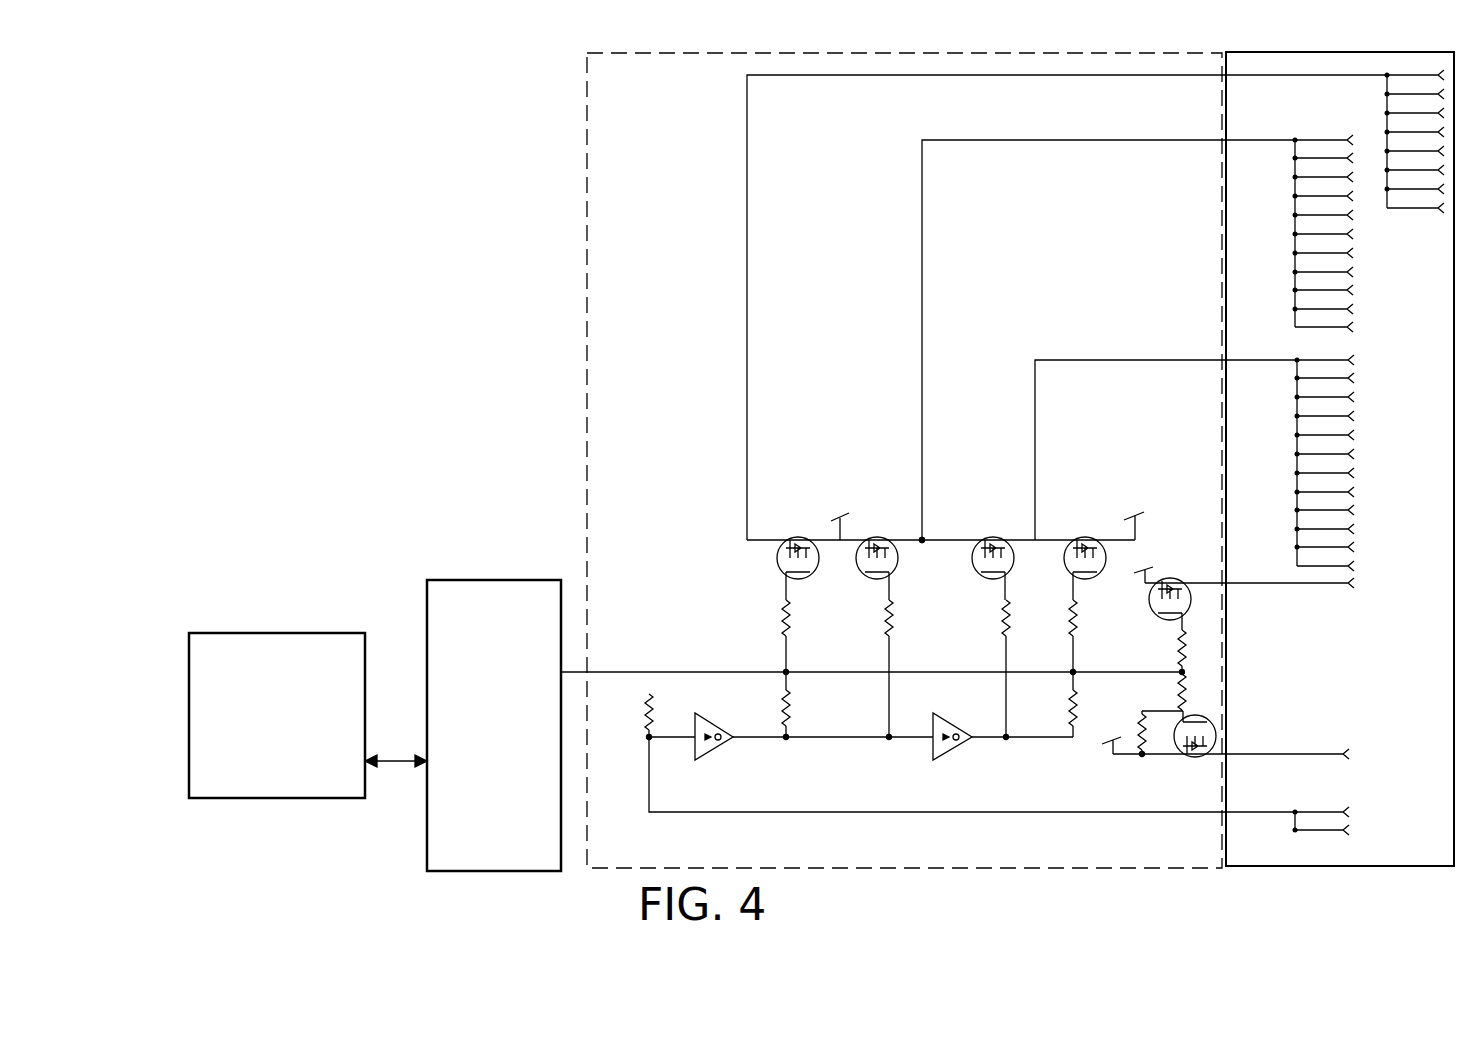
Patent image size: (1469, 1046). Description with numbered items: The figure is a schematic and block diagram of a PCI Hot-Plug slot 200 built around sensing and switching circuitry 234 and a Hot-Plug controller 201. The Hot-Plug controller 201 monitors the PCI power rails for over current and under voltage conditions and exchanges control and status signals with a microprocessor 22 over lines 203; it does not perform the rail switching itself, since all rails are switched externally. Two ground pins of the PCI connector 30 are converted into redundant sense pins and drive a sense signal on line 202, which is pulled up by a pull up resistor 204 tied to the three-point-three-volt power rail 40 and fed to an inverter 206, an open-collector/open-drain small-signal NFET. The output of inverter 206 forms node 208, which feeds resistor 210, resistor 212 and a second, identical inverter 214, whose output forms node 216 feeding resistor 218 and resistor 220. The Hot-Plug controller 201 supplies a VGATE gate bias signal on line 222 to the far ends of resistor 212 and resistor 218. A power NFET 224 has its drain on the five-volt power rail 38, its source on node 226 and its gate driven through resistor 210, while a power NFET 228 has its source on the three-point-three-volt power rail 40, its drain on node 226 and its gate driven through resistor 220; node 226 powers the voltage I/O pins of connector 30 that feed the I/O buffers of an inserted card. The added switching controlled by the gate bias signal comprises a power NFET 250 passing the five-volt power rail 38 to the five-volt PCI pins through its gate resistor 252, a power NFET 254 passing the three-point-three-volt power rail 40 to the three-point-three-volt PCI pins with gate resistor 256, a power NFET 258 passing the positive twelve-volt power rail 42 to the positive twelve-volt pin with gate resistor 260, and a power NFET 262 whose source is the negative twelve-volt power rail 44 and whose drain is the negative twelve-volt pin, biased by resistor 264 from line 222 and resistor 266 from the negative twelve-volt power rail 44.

The microprocessor 22 is at (323, 633).
The Hot-Plug controller 201 is at (448, 580).
The lines 203 is at (395, 758).
The PCI Hot-Plug slot 200 is at (437, 395).
The sensing and switching circuitry 234 is at (585, 320).
The PCI connector 30 is at (1221, 99).
The 5-volt power rail 38 is at (830, 512).
The 3.3-volt power rail 40 is at (1138, 516).
The +12-volt power rail 42 is at (1142, 578).
The −12-volt power rail 44 is at (1113, 744).
The power NFET 250 is at (796, 540).
The power NFET 224 is at (878, 542).
The node 226 is at (923, 540).
The power NFET 228 is at (996, 540).
The power NFET 254 is at (1080, 542).
The power NFET 258 is at (1200, 562).
The power NFET 262 is at (1190, 757).
The resistor 252 is at (790, 622).
The resistor 210 is at (893, 614).
The resistor 220 is at (1010, 627).
The resistor 256 is at (1077, 620).
The resistor 260 is at (1186, 645).
The resistor 212 is at (791, 702).
The resistor 218 is at (1070, 708).
The resistor 264 is at (1180, 690).
The resistor 266 is at (1138, 718).
The pull up resistor 204 is at (647, 720).
The inverter 206 is at (708, 752).
The inverter 214 is at (950, 752).
The line 222 is at (786, 672).
The node 208 is at (814, 738).
The node 216 is at (1010, 743).
The line 202 is at (876, 800).